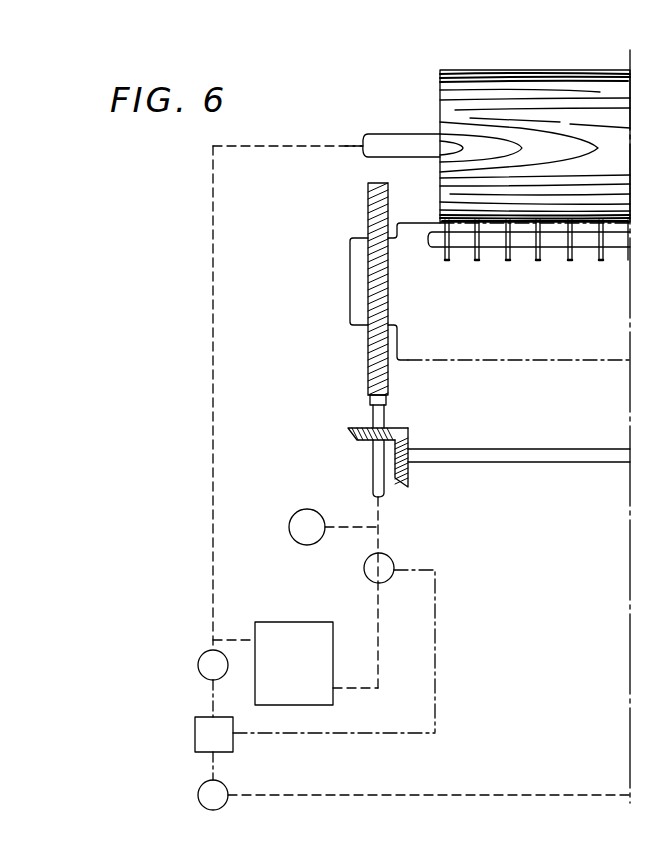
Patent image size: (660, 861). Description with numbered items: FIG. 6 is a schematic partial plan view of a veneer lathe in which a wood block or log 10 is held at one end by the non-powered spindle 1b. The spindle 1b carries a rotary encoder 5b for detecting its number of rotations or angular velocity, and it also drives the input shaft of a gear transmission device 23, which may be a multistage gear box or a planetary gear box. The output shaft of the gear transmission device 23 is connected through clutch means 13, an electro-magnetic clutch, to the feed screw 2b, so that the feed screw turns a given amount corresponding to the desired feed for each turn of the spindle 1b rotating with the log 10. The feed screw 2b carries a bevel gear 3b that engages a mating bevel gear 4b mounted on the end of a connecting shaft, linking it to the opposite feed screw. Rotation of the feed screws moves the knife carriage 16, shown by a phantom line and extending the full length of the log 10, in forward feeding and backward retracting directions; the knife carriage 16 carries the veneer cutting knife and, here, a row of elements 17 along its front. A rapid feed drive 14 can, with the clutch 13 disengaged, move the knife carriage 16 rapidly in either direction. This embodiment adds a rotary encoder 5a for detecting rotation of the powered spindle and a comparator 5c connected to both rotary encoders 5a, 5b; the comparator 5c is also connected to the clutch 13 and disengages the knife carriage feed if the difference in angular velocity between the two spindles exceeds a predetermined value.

The wood block 10 is at (452, 87).
The spindle 1b is at (390, 138).
The feed screw 2b is at (368, 340).
The bevel gear 3b is at (350, 436).
The bevel gear 4b is at (410, 471).
The rapid feed drive 14 is at (297, 516).
The clutch means 13 is at (386, 564).
The gear transmission device 23 is at (298, 630).
The rotary encoder 5b is at (202, 658).
The comparator 5c is at (198, 730).
The rotary encoder 5a is at (207, 791).
The knife carriage 16 is at (509, 353).
The pins 17 is at (477, 262).